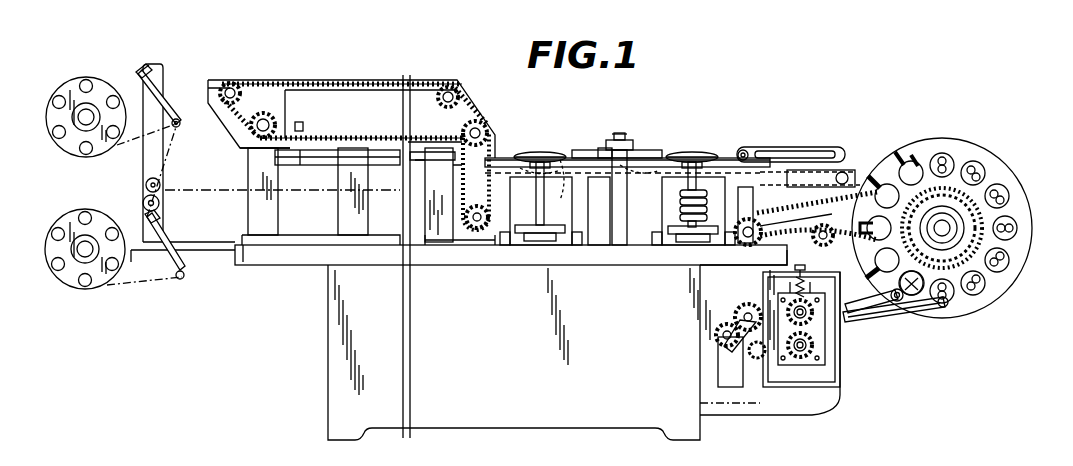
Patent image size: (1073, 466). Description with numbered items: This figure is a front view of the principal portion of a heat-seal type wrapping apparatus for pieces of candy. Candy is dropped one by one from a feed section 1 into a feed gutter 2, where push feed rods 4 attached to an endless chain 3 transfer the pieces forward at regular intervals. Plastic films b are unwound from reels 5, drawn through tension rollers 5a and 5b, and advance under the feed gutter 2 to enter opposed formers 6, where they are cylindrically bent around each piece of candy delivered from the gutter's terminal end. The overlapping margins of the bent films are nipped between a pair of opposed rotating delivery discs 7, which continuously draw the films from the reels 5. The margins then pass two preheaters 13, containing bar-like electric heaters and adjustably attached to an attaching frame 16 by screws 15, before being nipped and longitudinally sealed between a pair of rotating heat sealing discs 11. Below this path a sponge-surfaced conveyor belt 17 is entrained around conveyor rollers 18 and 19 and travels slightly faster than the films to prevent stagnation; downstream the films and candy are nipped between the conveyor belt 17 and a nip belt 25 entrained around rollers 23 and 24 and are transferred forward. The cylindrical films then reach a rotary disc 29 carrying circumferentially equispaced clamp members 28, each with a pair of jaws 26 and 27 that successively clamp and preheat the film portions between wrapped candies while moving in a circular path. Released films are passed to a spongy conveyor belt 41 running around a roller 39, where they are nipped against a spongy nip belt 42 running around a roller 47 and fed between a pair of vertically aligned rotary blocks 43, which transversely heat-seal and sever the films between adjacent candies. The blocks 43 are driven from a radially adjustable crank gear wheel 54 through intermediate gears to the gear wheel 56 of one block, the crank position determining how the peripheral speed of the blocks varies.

The feed section 1 is at (345, 100).
The feed gutter 2 is at (393, 165).
The endless chain 3 is at (370, 138).
The push feed rods 4 is at (433, 162).
The reels 5 is at (94, 147).
The tension roller 5a is at (181, 127).
The tension roller 5b is at (162, 184).
The formers 6 is at (510, 158).
The delivery discs 7 is at (541, 153).
The heat sealing discs 11 is at (697, 153).
The preheaters 13 is at (641, 150).
The screws 15 is at (620, 133).
The attaching frame 16 is at (627, 210).
The conveyor belt 17 is at (558, 175).
The conveyor roller 18 is at (566, 157).
The conveyor roller 19 is at (858, 168).
The roller 23 is at (745, 149).
The roller 24 is at (840, 148).
The nip belt 25 is at (800, 147).
The jaw 26 is at (884, 185).
The jaw 27 is at (911, 161).
The clamp members 28 is at (942, 153).
The rotary disc 29 is at (990, 164).
The roller 39 is at (944, 306).
The conveyor belt 41 is at (915, 318).
The nip belt 42 is at (840, 330).
The rotary blocks 43 is at (790, 305).
The roller 47 is at (890, 316).
The crank gear wheel 54 is at (725, 342).
The gear wheel 56 is at (805, 362).
The plastic films b is at (287, 195).